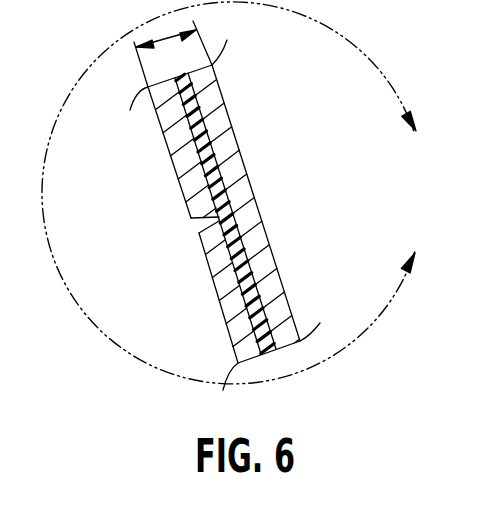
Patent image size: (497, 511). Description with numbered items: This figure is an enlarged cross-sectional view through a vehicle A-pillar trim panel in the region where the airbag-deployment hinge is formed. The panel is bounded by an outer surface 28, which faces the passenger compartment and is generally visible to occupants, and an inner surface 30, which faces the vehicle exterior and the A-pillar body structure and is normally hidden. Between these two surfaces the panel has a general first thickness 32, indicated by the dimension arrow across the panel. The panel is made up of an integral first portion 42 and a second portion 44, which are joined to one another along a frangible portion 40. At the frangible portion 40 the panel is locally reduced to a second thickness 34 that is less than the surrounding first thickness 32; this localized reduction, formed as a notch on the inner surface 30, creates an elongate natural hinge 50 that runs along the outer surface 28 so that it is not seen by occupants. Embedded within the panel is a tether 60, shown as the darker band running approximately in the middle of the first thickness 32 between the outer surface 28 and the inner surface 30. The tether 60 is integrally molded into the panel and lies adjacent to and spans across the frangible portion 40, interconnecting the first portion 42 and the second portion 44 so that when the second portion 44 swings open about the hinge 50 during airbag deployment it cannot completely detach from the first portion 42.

The outer surface 28 is at (232, 120).
The inner surface 30 is at (173, 162).
The first thickness 32 is at (197, 30).
The second thickness 34 is at (207, 180).
The frangible portion 40 is at (183, 235).
The first portion 42 is at (147, 135).
The second portion 44 is at (223, 313).
The hinge 50 is at (210, 221).
The tether 60 is at (261, 300).